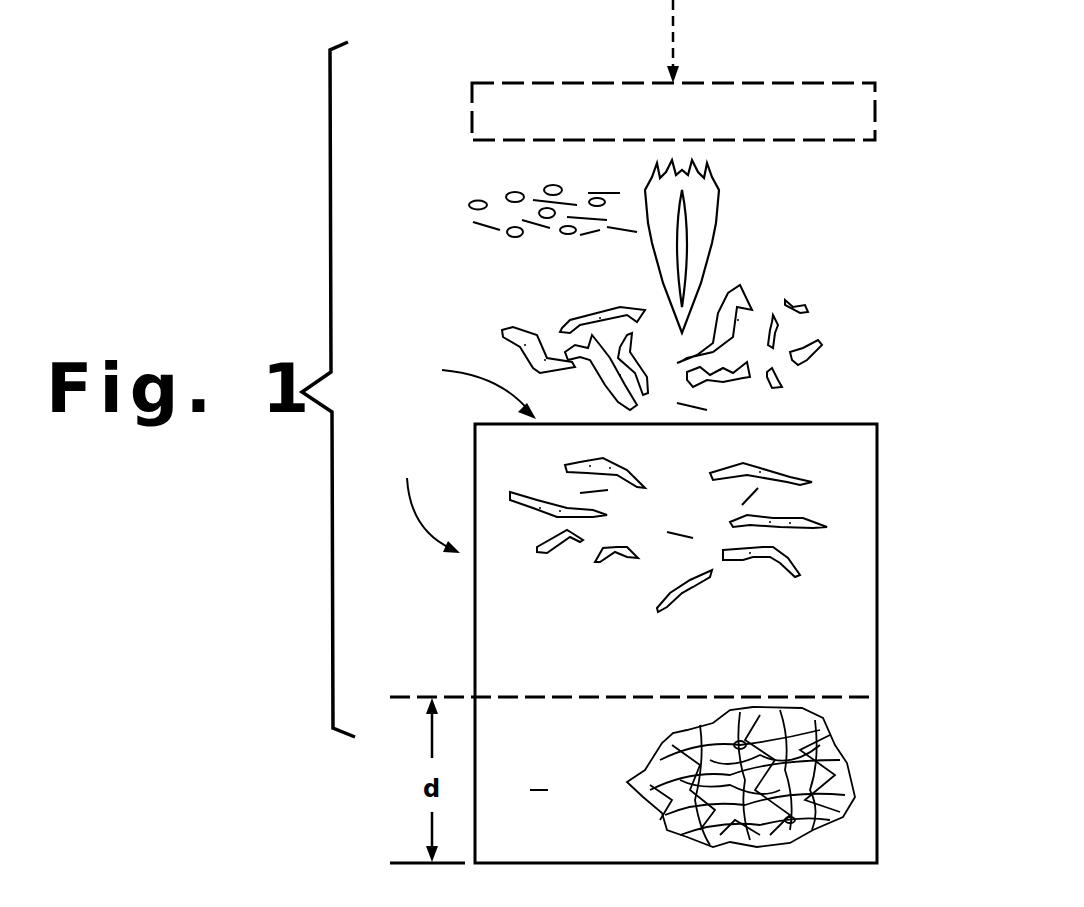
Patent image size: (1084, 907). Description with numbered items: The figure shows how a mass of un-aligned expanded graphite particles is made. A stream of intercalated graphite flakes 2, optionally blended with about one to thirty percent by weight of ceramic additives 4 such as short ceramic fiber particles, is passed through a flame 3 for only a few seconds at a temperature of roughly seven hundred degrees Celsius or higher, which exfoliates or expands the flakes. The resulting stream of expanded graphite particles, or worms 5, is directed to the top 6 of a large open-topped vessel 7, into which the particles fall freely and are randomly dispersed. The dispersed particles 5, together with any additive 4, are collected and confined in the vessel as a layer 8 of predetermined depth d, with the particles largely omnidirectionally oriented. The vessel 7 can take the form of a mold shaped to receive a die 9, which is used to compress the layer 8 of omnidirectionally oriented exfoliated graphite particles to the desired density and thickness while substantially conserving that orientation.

The intercalated graphite flakes 2 is at (513, 237).
The flame 3 is at (717, 222).
The ceramic additives 4 is at (495, 205).
The expanded graphite particles 5 is at (733, 387).
The top of vessel 6 is at (478, 392).
The open-topped vessel 7 is at (633, 643).
The layer 8 is at (692, 777).
The die 9 is at (800, 83).